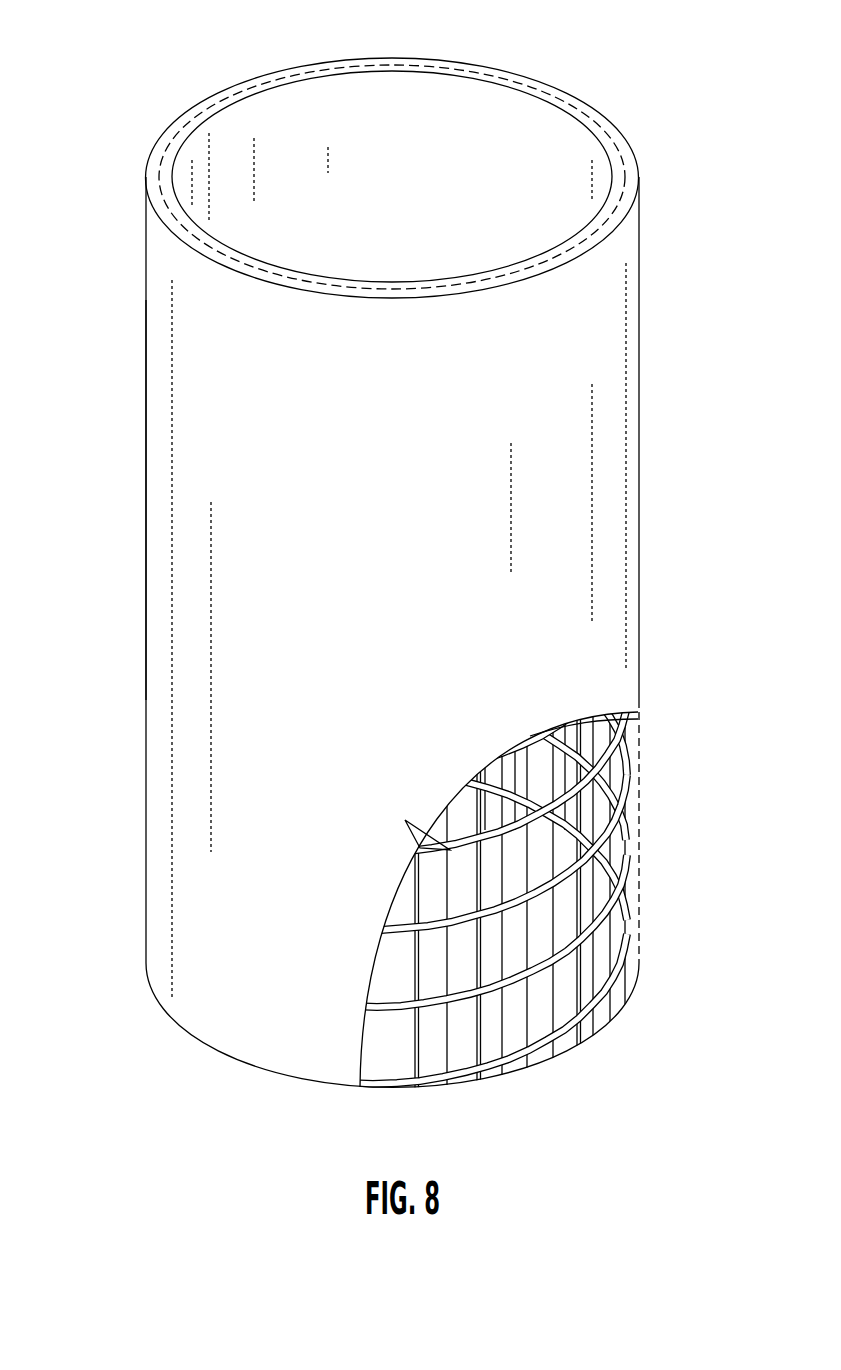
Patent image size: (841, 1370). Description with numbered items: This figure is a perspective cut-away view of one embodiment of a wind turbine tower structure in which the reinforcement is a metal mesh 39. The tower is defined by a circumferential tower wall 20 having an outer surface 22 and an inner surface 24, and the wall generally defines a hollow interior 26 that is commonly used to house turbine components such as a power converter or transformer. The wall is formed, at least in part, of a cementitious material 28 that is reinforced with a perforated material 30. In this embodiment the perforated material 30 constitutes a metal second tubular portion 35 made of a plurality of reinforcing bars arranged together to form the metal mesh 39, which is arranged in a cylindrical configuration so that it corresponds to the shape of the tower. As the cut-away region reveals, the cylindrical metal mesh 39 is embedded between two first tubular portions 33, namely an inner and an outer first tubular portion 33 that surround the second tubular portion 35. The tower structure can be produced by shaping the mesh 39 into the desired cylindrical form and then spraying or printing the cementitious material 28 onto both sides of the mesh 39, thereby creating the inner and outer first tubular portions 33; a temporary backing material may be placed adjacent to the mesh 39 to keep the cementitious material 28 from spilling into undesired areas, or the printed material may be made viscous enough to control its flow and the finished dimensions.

The circumferential tower wall 20 is at (145, 433).
The outer surface 22 is at (146, 573).
The inner surface 24 is at (147, 637).
The hollow interior 26 is at (406, 188).
The cementitious material 28 is at (613, 642).
The perforated material 30 is at (145, 958).
The first tubular portion 33 is at (163, 143).
The second tubular portion 35 is at (229, 97).
The metal mesh 39 is at (417, 1052).